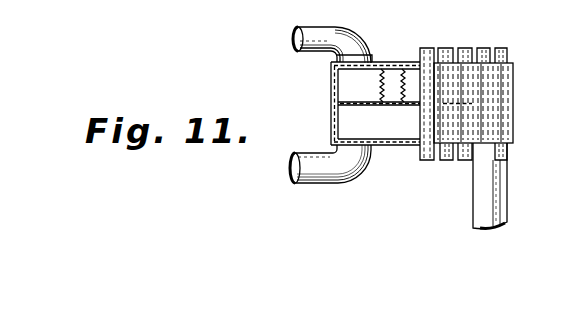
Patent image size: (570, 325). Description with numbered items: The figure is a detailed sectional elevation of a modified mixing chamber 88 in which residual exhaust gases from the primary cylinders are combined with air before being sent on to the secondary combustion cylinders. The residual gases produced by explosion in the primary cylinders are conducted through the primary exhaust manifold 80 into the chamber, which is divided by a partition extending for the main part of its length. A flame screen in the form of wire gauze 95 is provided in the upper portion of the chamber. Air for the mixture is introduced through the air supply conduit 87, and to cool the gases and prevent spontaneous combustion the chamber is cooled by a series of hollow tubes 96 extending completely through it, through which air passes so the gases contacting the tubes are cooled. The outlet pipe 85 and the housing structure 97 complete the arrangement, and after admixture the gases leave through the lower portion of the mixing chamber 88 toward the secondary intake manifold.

The primary exhaust manifold 80 is at (330, 19).
The outlet pipe 85 is at (326, 184).
The air supply conduit 87 is at (492, 182).
The mixing chamber 88 is at (505, 99).
The wire gauze 95 is at (386, 72).
The hollow tubes 96 is at (428, 52).
The housing 97 is at (350, 101).